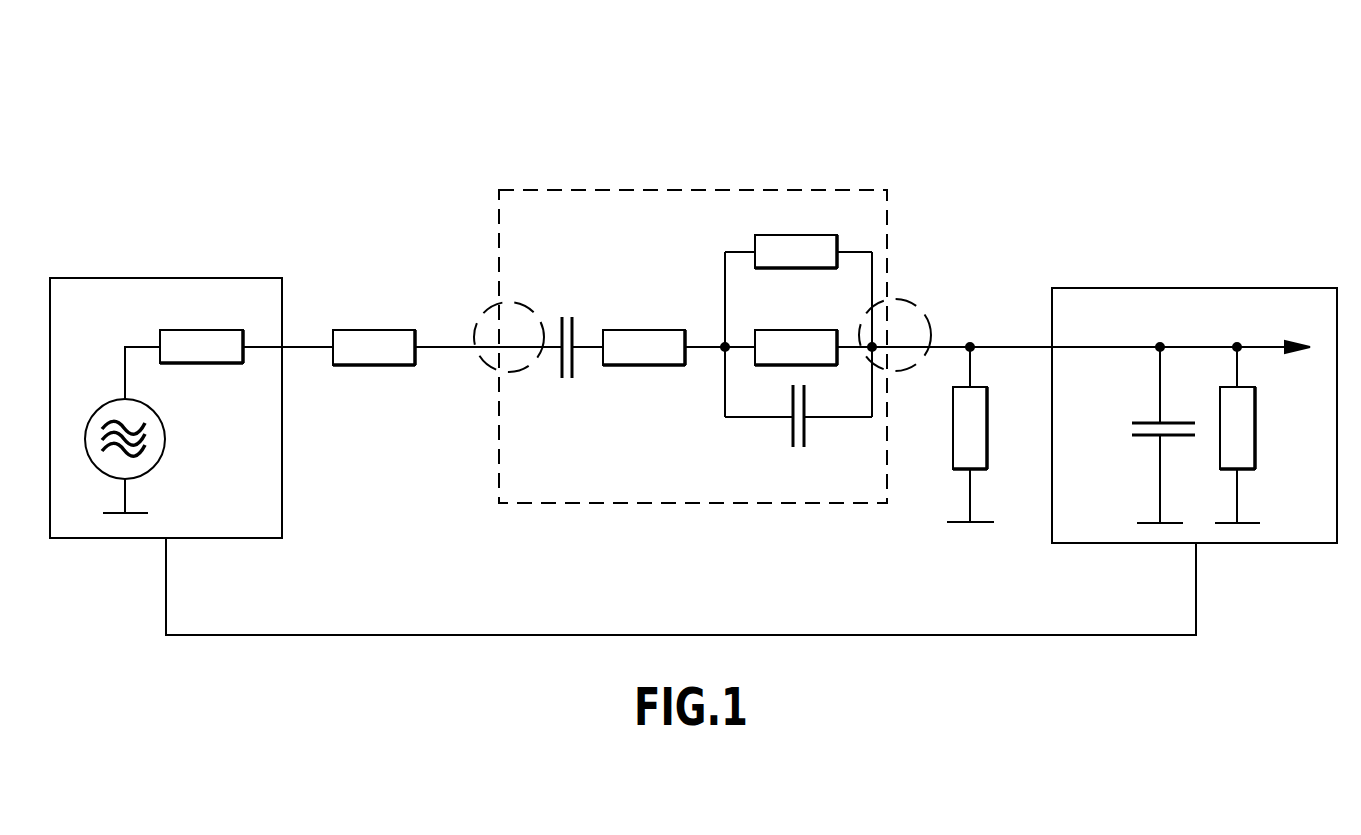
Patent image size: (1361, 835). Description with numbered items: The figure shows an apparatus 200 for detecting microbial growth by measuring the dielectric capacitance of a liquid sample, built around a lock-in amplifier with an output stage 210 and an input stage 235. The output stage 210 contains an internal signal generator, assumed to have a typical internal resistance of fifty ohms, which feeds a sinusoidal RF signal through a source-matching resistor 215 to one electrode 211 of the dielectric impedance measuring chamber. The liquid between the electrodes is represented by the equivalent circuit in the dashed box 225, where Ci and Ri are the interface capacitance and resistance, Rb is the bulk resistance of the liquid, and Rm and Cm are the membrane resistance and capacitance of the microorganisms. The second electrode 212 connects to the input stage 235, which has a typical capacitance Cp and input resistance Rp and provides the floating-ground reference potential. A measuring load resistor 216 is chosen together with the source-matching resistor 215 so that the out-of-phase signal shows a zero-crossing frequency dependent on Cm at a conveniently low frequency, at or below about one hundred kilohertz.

The measurement system circuit 200 is at (1198, 64).
The output stage 210 is at (167, 278).
The electrode 211 is at (496, 310).
The second electrode 212 is at (905, 300).
The source-matching resistor 215 is at (370, 365).
The measuring load resistor 216 is at (976, 465).
The dashed box 225 is at (695, 190).
The input stage 235 is at (1195, 288).